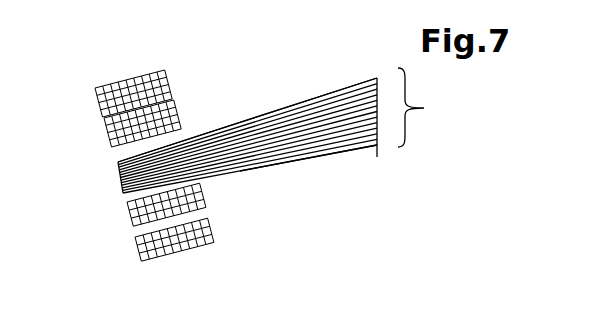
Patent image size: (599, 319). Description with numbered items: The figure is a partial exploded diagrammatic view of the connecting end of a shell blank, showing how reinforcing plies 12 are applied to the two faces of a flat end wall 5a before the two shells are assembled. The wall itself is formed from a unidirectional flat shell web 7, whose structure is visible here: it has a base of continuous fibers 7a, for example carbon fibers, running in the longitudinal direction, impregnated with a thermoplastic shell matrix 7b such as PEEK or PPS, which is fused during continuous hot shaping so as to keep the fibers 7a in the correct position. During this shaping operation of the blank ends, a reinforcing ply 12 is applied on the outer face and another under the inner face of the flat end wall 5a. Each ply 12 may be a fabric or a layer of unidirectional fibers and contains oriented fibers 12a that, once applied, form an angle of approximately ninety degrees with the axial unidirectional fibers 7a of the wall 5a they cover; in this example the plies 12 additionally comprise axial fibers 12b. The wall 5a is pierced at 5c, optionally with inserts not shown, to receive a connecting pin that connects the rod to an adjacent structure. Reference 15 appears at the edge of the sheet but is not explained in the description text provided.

The reinforcing plies 12 is at (161, 171).
The oriented fibers 12a is at (178, 118).
The axial fibers 12b is at (128, 80).
The flat end wall 5a is at (113, 181).
The piercing 5c is at (160, 149).
The unidirectional flat shell web 7 is at (419, 107).
The continuous fibers 7a is at (330, 93).
The thermoplastic shell matrix 7b is at (353, 146).
The support 15 is at (308, 314).